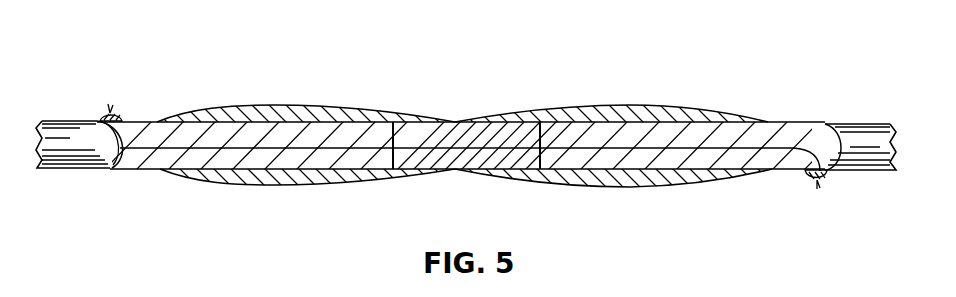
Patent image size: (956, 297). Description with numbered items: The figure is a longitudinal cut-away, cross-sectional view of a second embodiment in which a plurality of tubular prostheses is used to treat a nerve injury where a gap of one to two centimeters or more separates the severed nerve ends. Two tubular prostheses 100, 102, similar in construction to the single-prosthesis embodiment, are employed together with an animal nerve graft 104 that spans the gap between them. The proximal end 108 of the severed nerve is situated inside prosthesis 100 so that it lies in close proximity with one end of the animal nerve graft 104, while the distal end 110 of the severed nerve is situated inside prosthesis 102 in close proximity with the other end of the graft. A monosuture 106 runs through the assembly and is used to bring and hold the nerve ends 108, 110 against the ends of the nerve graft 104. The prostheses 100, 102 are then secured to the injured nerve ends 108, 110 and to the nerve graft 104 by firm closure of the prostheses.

The tubular prosthesis 100 is at (284, 104).
The tubular prosthesis 102 is at (612, 106).
The animal nerve graft 104 is at (455, 122).
The monosuture 106 is at (688, 150).
The proximal end of the severed nerve 108 is at (393, 169).
The distal end of the severed nerve 110 is at (540, 150).